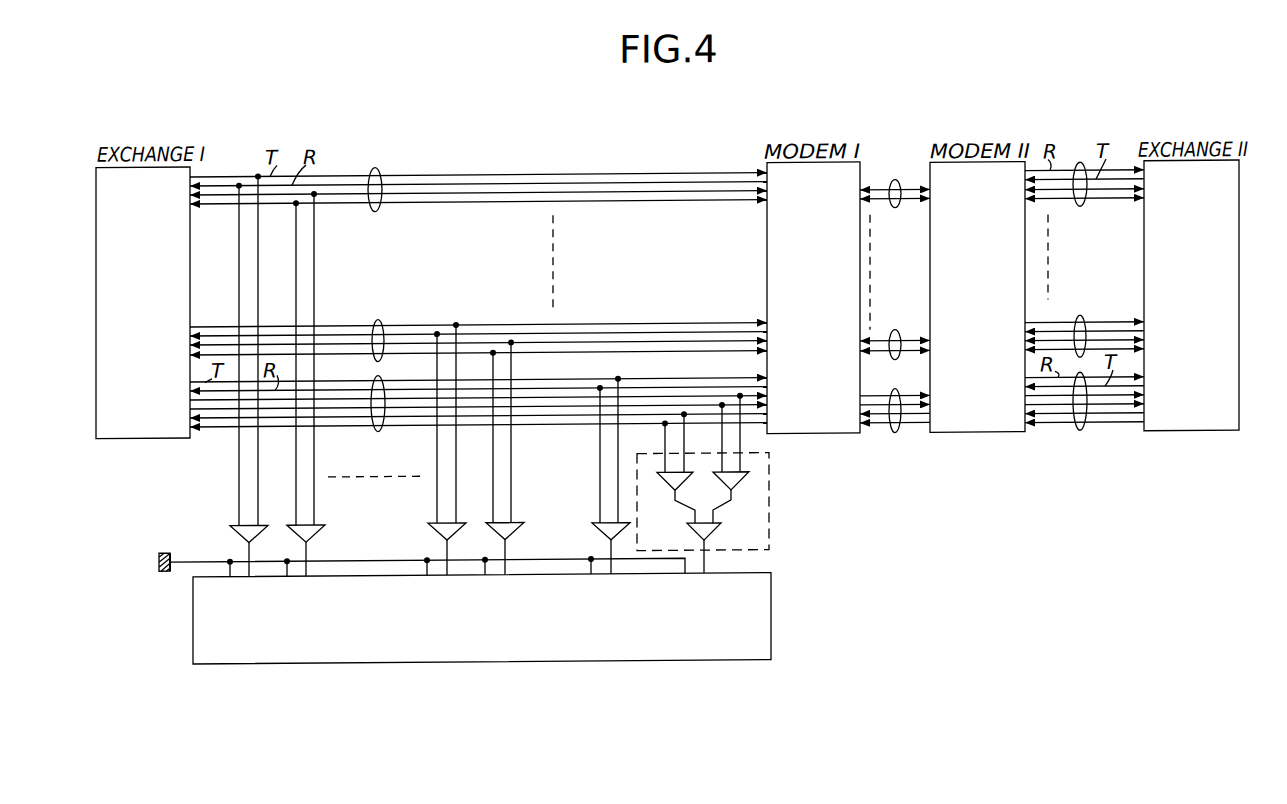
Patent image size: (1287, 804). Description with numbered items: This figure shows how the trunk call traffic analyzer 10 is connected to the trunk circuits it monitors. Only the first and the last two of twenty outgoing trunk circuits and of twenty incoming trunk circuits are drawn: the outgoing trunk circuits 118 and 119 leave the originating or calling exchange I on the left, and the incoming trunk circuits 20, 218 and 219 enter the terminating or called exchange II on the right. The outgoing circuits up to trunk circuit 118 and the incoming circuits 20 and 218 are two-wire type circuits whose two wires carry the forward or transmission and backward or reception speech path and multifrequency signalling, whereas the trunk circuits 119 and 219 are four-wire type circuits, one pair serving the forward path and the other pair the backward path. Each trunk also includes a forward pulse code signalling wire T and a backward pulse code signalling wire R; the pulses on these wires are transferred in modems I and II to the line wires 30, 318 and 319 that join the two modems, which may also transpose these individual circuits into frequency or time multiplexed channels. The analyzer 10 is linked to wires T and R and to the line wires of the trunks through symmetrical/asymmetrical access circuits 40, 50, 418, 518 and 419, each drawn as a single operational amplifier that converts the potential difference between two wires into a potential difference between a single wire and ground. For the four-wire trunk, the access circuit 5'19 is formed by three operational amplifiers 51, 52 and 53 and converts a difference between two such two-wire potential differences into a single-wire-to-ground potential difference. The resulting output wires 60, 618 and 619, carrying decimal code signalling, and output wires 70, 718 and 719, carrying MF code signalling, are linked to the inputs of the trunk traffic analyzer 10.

The trunk call traffic analyzer 10 is at (772, 627).
The outgoing trunk circuit 118 is at (378, 321).
The outgoing trunk circuit 119 is at (378, 433).
The trunk circuit line wires 30 is at (895, 213).
The trunk circuit line wires 318 is at (895, 335).
The trunk circuit line wires 319 is at (895, 438).
The incoming trunk circuit 20 is at (1080, 213).
The incoming trunk circuit 218 is at (1080, 322).
The incoming trunk circuit 219 is at (1080, 437).
The symmetrical/asymmetrical access circuit 40 is at (233, 527).
The symmetrical/asymmetrical access circuit 50 is at (310, 527).
The symmetrical/asymmetrical access circuit 418 is at (430, 527).
The symmetrical/asymmetrical access circuit 518 is at (512, 527).
The symmetrical/asymmetrical access circuit 419 is at (594, 528).
The symmetrical/asymmetrical access circuit 5'19 is at (728, 477).
The operational amplifier 51 is at (670, 478).
The operational amplifier 52 is at (735, 479).
The operational amplifier 53 is at (712, 536).
The output wire 60 is at (249, 577).
The output wire 70 is at (306, 577).
The output wire 618 is at (446, 577).
The output wire 718 is at (505, 577).
The output wire 619 is at (611, 578).
The output wire 719 is at (706, 578).